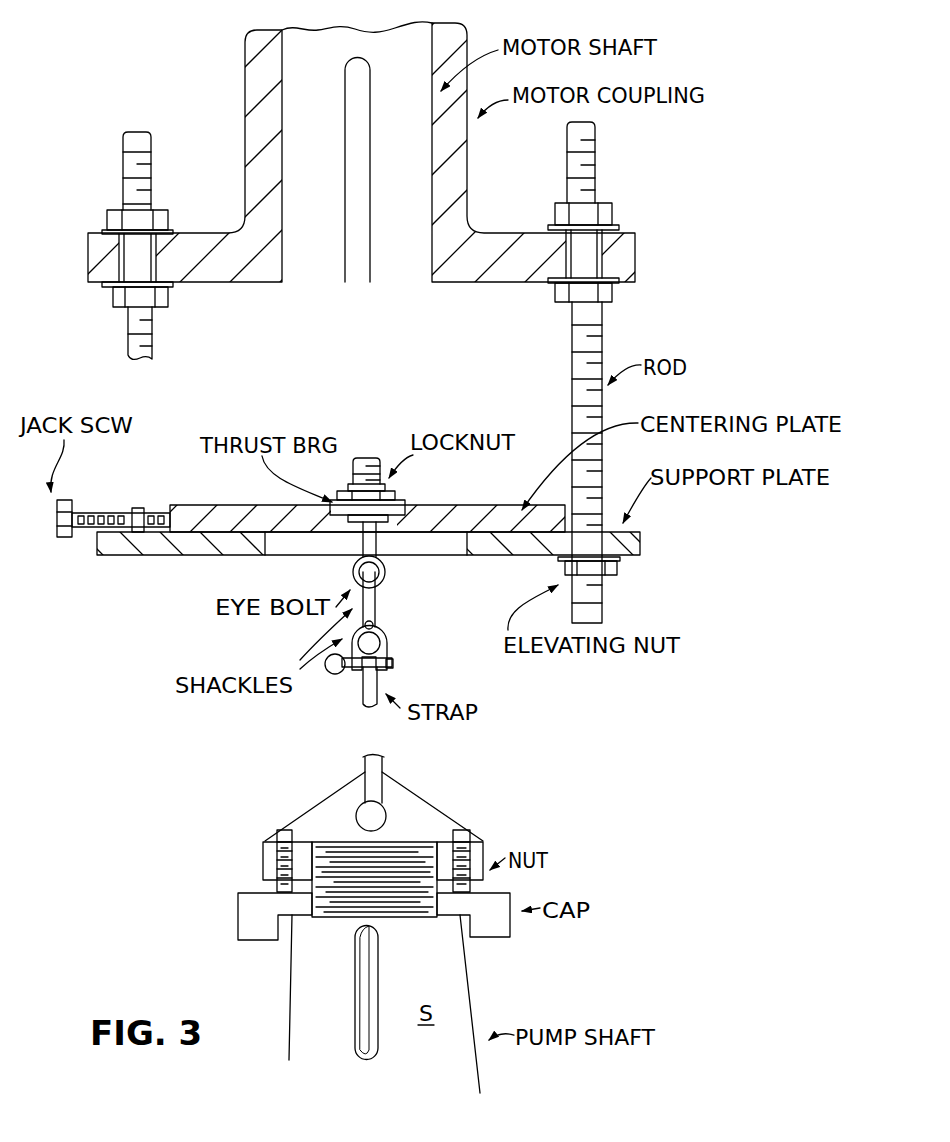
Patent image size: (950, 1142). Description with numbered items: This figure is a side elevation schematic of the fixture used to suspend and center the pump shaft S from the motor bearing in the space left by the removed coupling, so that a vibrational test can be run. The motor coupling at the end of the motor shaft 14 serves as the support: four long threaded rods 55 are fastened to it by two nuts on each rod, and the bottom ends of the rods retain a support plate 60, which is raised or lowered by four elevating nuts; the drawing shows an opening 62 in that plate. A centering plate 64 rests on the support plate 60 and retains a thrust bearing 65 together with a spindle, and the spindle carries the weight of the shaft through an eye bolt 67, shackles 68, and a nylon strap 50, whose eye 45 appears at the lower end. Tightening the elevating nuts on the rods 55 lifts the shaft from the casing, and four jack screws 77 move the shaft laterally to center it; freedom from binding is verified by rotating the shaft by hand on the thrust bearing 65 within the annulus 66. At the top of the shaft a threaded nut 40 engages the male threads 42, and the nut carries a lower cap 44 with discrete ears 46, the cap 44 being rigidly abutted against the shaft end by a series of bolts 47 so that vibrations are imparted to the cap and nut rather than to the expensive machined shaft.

The shaft 14 is at (470, 48).
The threaded rods 55 is at (127, 333).
The jack screws 77 is at (118, 510).
The centering plate 64 is at (222, 505).
The support plate 60 is at (148, 545).
The slot in support plate 62 is at (266, 551).
The thrust bearing 65 is at (338, 500).
The annulus 66 is at (350, 551).
The eye bolt 67 is at (386, 573).
The shackles 68 is at (381, 612).
The nylon strap 50 is at (383, 683).
The strap eye 45 is at (361, 805).
The bolts 47 is at (282, 830).
The threaded nut 40 is at (263, 864).
The male threads 42 is at (405, 865).
The lower cap 44 is at (228, 912).
The ears 46 is at (267, 928).